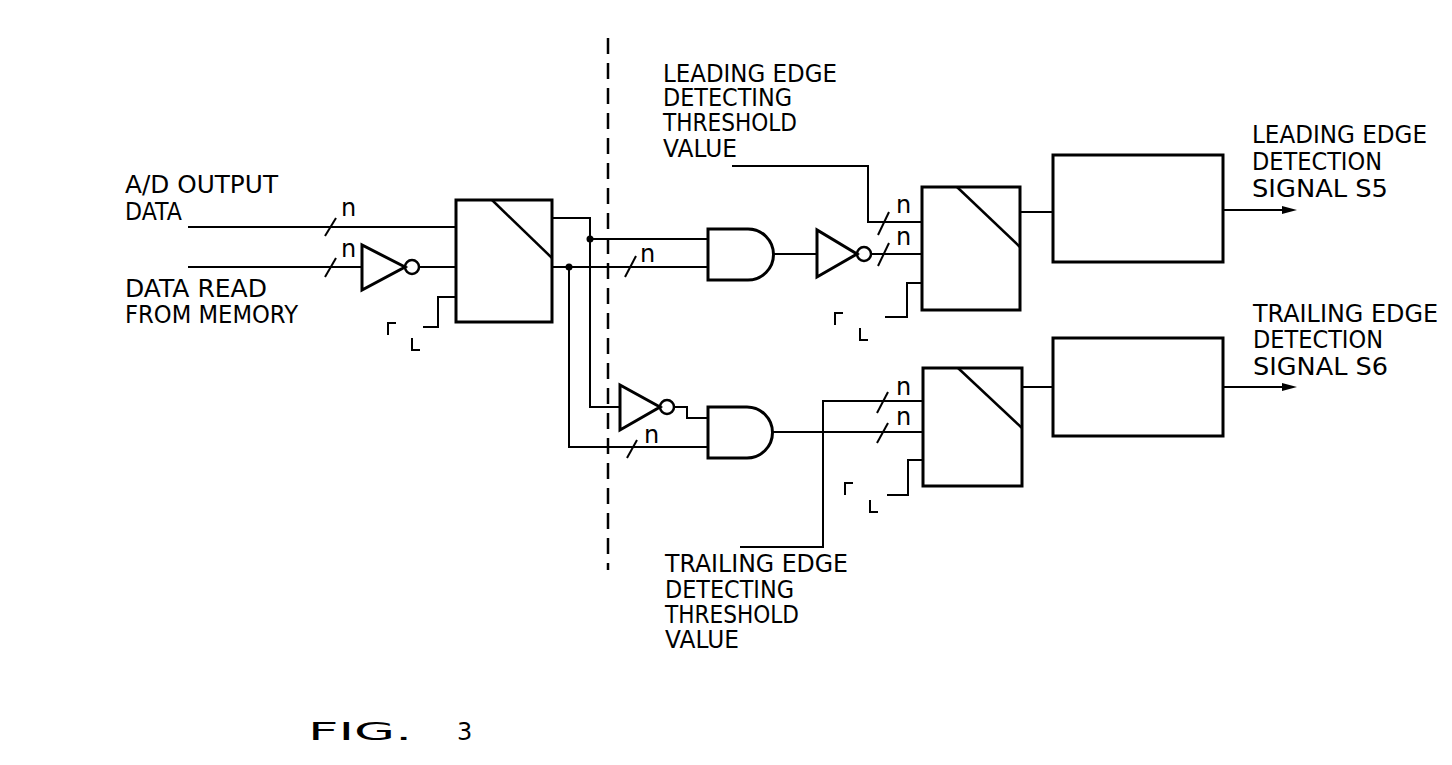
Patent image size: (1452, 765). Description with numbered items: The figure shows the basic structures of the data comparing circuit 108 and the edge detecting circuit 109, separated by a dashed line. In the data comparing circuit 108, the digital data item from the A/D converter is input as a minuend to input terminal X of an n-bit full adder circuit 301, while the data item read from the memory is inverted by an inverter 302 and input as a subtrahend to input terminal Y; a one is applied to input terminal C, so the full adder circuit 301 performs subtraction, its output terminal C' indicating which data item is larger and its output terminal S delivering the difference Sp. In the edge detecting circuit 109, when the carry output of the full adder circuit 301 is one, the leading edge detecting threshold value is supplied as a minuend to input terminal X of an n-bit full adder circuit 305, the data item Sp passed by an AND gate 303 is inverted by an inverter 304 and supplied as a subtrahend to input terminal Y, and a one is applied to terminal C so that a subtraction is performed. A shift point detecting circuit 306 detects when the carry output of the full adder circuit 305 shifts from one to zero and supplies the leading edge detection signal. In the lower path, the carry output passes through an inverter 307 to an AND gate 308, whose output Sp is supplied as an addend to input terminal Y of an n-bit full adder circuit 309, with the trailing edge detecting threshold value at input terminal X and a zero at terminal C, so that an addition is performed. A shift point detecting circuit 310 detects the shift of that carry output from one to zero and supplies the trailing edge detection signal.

The data comparing circuit 108 is at (410, 562).
The edge detecting circuit 109 is at (1104, 558).
The full adder circuit 301 is at (533, 200).
The inverter 302 is at (372, 290).
The AND gate 303 is at (735, 228).
The inverter 304 is at (817, 276).
The full adder circuit 305 is at (988, 187).
The shift point detecting circuit 306 is at (1150, 155).
The inverter 307 is at (636, 385).
The AND gate 308 is at (735, 407).
The full adder circuit 309 is at (948, 368).
The shift point detecting circuit 310 is at (1150, 338).